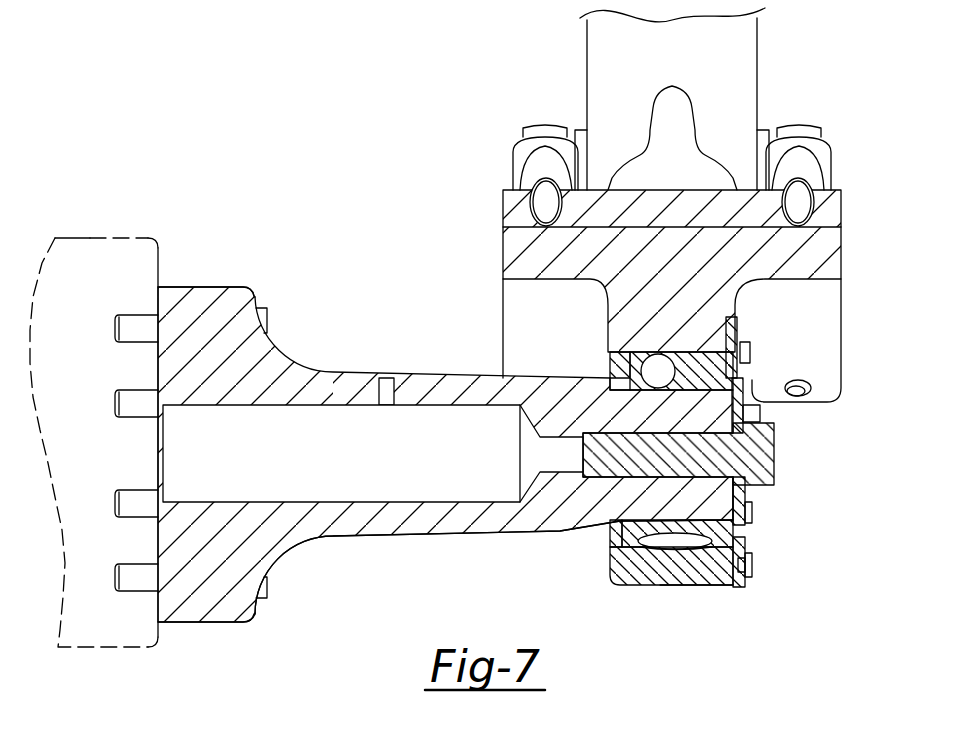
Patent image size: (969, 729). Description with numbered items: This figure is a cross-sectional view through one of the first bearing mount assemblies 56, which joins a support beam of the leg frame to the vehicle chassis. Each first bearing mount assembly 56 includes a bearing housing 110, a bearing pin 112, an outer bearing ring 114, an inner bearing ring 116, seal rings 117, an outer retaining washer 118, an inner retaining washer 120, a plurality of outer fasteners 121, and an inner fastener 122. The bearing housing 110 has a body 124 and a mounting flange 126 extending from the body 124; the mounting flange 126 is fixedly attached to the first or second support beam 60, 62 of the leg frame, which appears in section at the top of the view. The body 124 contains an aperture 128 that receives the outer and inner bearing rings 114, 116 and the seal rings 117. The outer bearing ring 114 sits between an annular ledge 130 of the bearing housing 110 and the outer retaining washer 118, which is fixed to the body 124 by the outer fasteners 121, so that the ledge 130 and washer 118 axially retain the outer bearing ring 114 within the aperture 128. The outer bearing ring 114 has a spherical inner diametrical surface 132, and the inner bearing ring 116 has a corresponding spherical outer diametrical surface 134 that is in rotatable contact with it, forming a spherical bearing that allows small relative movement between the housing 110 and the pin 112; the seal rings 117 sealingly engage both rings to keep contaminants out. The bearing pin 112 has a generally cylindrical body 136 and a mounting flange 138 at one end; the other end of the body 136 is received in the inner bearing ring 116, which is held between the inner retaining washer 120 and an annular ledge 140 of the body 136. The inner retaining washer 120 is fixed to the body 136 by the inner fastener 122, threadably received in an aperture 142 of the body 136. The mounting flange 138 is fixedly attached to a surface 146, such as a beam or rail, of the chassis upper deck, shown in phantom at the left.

The first bearing mount assembly 56 is at (408, 272).
The first support beam 60 is at (730, 99).
The second support beam 62 is at (738, 53).
The bearing housing 110 is at (713, 339).
The bearing pin 112 is at (424, 419).
The outer bearing ring 114 is at (677, 550).
The inner bearing ring 116 is at (693, 533).
The seal rings 117 is at (618, 365).
The outer retaining washer 118 is at (752, 572).
The inner retaining washer 120 is at (750, 517).
The outer fasteners 121 is at (752, 560).
The inner fastener 122 is at (757, 457).
The body 124 is at (627, 573).
The mounting flange 126 is at (803, 255).
The aperture 128 is at (600, 385).
The annular ledge 130 is at (623, 548).
The inner diametrical surface 132 is at (732, 362).
The outer diametrical surface 134 is at (658, 362).
The body 136 is at (462, 525).
The mounting flange 138 is at (205, 296).
The annular ledge 140 is at (636, 527).
The aperture 142 is at (550, 450).
The surface 146 is at (78, 238).